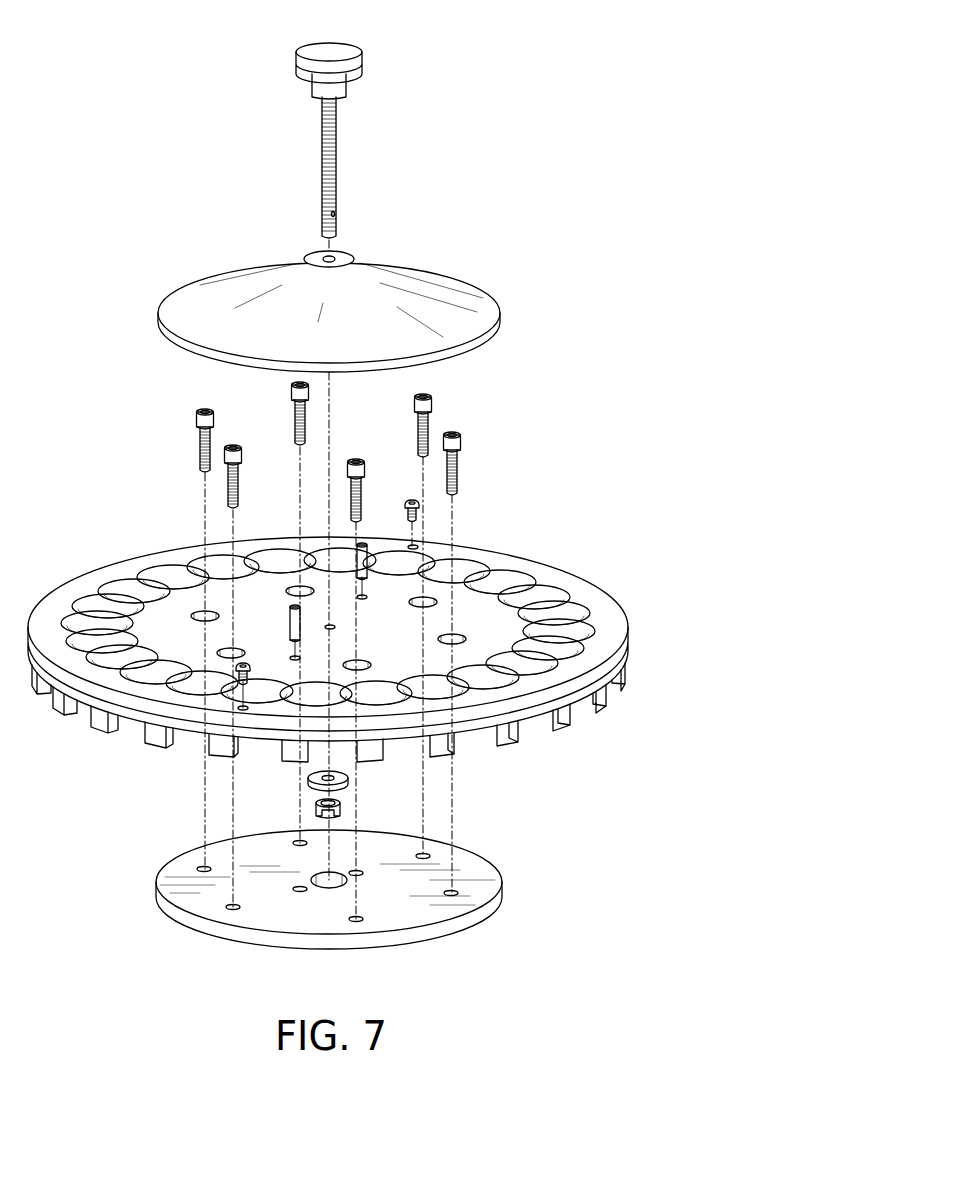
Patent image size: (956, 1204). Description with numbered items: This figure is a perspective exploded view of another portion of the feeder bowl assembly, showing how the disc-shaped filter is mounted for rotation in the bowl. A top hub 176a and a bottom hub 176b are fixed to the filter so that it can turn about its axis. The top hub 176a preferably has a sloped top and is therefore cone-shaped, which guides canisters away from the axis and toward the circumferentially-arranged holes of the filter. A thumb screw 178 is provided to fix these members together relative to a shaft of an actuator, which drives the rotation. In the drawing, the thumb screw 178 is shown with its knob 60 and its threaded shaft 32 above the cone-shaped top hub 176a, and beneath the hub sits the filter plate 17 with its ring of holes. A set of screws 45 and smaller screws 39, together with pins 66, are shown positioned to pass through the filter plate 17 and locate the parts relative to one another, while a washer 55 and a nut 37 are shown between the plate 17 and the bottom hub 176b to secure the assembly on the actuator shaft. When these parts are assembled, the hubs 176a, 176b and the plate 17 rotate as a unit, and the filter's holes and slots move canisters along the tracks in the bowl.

The thumb screw 178 is at (183, 109).
The knob 60 is at (362, 62).
The threaded shaft 32 is at (336, 138).
The top hub 176a is at (501, 300).
The socket head screws 45 is at (462, 442).
The button head screws 39 is at (421, 506).
The locating pins 66 is at (367, 546).
The carousel plate 17 is at (628, 624).
The washer 55 is at (349, 778).
The castle nut 37 is at (342, 804).
The bottom hub 176b is at (502, 886).